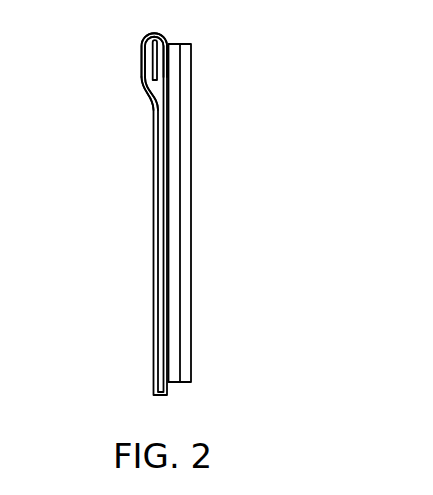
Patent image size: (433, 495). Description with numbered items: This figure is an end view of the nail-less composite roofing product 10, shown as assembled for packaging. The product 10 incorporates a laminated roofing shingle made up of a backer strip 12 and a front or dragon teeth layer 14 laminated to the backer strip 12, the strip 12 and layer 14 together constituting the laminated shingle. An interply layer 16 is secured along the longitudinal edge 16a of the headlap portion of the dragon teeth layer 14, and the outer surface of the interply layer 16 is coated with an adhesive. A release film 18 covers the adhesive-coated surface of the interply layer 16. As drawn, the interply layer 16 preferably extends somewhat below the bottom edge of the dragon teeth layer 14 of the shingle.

The nail-less composite roofing product 10 is at (180, 211).
The backer strip 12 is at (189, 127).
The dragon teeth layer 14 is at (173, 211).
The interply layer 16 is at (145, 58).
The longitudinal edge 16a is at (160, 67).
The release film 18 is at (145, 85).